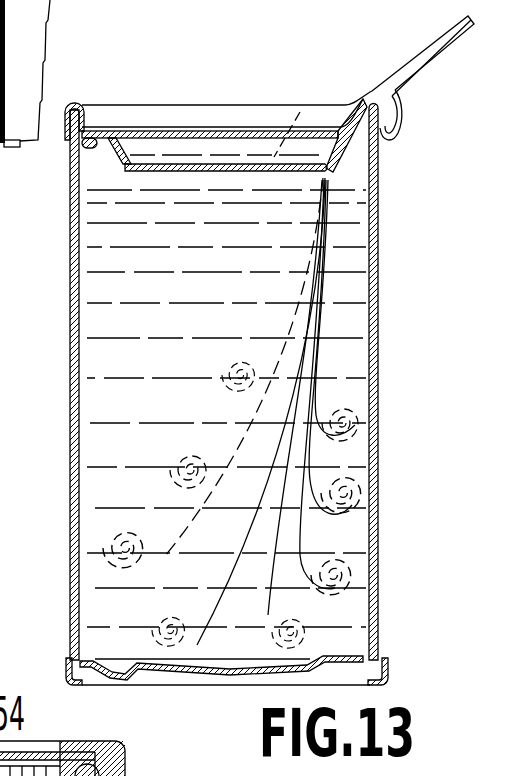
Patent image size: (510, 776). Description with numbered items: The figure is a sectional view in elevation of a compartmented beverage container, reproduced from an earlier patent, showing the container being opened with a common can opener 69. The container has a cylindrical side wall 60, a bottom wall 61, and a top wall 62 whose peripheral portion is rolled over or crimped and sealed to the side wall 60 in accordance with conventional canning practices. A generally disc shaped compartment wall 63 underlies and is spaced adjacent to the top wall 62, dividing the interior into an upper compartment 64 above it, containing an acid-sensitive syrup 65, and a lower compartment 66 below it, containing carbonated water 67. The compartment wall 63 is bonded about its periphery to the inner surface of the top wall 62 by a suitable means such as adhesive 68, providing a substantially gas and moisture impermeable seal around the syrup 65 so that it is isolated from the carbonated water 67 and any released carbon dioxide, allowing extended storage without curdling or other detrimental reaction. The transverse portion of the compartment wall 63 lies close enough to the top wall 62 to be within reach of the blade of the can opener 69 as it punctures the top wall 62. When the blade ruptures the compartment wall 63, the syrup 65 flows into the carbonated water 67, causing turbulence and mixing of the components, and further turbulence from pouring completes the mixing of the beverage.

The cylindrical side wall 60 is at (73, 578).
The bottom wall 61 is at (199, 683).
The top wall 62 is at (168, 137).
The compartment wall 63 is at (123, 170).
The upper compartment 64 is at (230, 124).
The acid-sensitive syrup 65 is at (300, 110).
The lower compartment 66 is at (358, 358).
The carbonated water 67 is at (90, 378).
The adhesive 68 is at (93, 145).
The can opener 69 is at (413, 68).